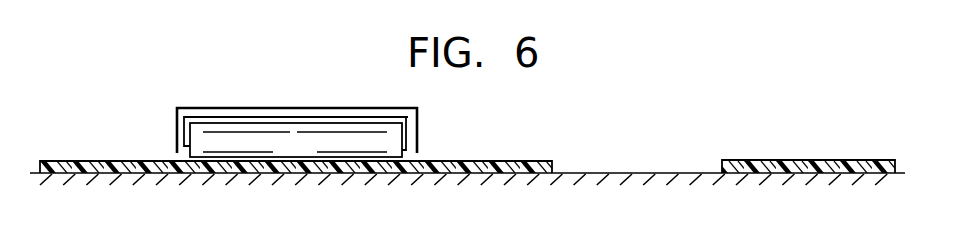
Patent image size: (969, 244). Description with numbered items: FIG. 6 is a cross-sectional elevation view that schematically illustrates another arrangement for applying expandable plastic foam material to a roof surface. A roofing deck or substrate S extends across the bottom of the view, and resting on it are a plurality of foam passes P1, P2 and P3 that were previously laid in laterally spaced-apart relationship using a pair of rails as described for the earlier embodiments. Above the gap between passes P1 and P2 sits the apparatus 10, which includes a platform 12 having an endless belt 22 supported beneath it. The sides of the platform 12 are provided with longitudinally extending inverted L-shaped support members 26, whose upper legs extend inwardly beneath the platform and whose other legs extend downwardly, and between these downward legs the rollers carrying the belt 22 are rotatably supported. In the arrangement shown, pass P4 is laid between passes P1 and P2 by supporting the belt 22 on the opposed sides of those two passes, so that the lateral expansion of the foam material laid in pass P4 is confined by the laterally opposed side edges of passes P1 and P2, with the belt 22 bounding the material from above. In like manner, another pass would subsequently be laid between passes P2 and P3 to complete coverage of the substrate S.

The apparatus 10 is at (295, 88).
The platform 12 is at (265, 109).
The endless belt 22 is at (293, 118).
The inverted L-shaped support members 26 is at (176, 127).
The substrate S is at (634, 173).
The first pass P1 is at (113, 167).
The second pass P2 is at (478, 163).
The third pass P3 is at (822, 163).
The fourth pass P4 is at (295, 165).